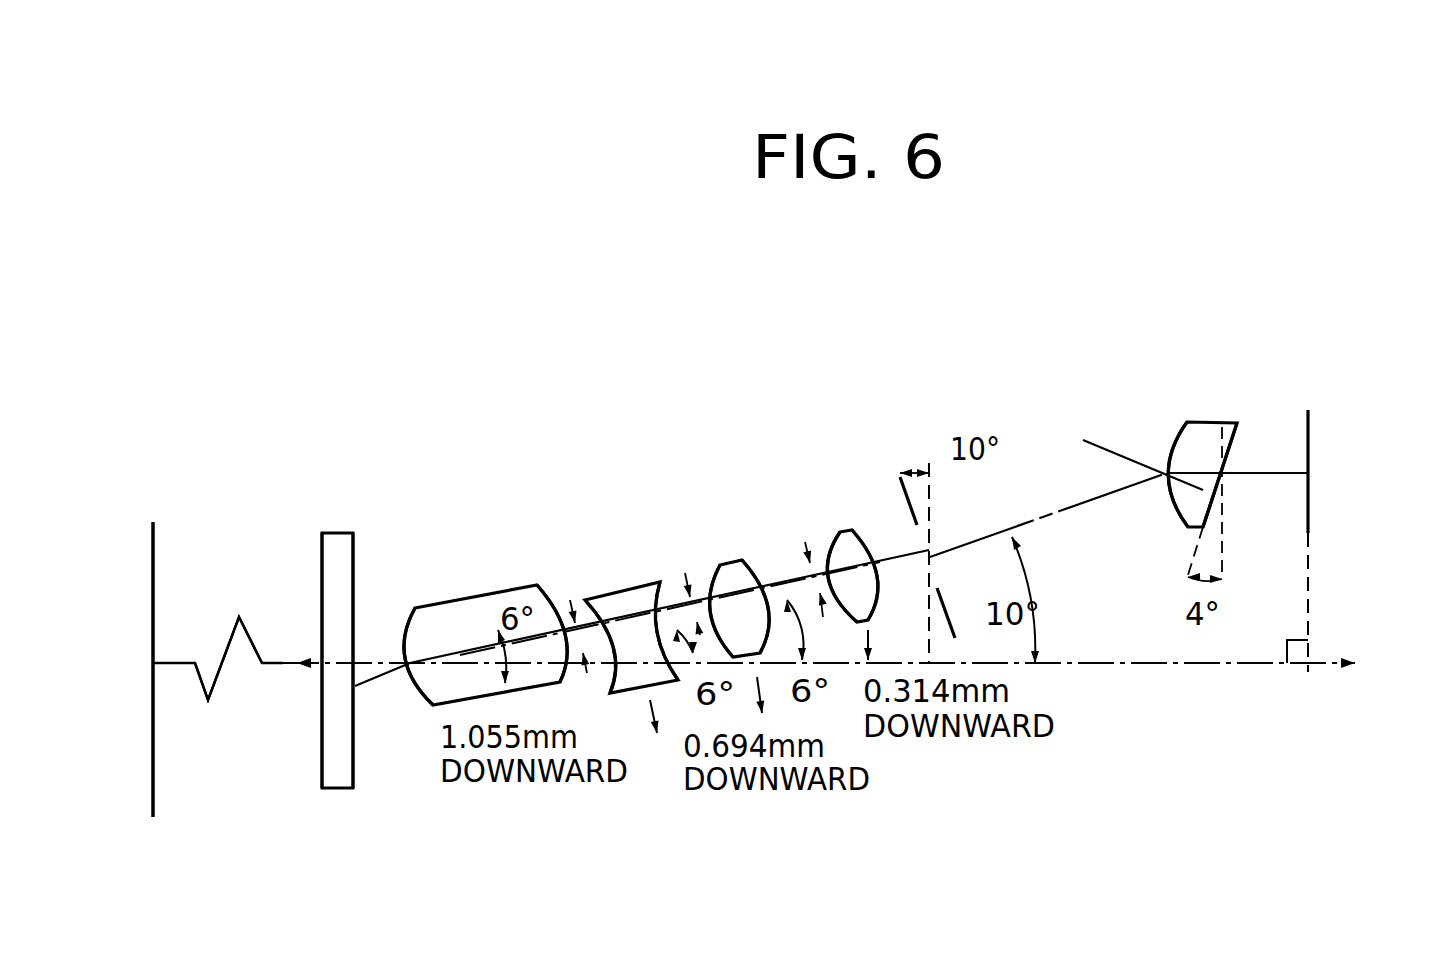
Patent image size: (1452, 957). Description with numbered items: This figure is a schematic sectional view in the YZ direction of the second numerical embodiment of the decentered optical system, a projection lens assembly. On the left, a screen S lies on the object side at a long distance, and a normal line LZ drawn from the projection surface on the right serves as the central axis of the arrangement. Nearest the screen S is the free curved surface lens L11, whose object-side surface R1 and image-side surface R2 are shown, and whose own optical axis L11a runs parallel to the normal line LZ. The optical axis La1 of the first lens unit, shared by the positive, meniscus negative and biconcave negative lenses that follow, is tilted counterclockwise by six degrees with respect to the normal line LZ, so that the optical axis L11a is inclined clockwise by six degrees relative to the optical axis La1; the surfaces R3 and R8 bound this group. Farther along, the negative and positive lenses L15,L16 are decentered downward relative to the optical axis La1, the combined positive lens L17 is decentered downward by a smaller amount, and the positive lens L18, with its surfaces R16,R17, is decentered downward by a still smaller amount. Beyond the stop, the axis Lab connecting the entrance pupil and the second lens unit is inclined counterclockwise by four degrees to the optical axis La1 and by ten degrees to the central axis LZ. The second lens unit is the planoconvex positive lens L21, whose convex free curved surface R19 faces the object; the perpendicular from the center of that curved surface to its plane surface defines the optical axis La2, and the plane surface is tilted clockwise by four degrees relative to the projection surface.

The screen S is at (153, 790).
The normal line (central axis) LZ is at (781, 658).
The optical axis of first lens L11 L11a is at (283, 663).
The free curved surface lens L11 is at (337, 533).
The first lens surface R1 is at (322, 565).
The second lens surface R2 is at (355, 543).
The optical axis of first lens unit La1 is at (383, 677).
The third lens surface R3 is at (410, 627).
The eighth lens surface R8 is at (548, 607).
The negative lens and positive lens L15,L16 is at (604, 580).
The combined positive lens L17 is at (732, 535).
The positive lens L18 is at (845, 478).
The sixteenth and seventeenth lens surfaces R16,R17 is at (927, 396).
The optical axis of second lens unit La2 is at (1083, 452).
The axis connecting entrance pupil and second lens unit Lab is at (1102, 497).
The planoconvex positive lens L21 is at (1200, 420).
The nineteenth lens surface R19 is at (1172, 447).